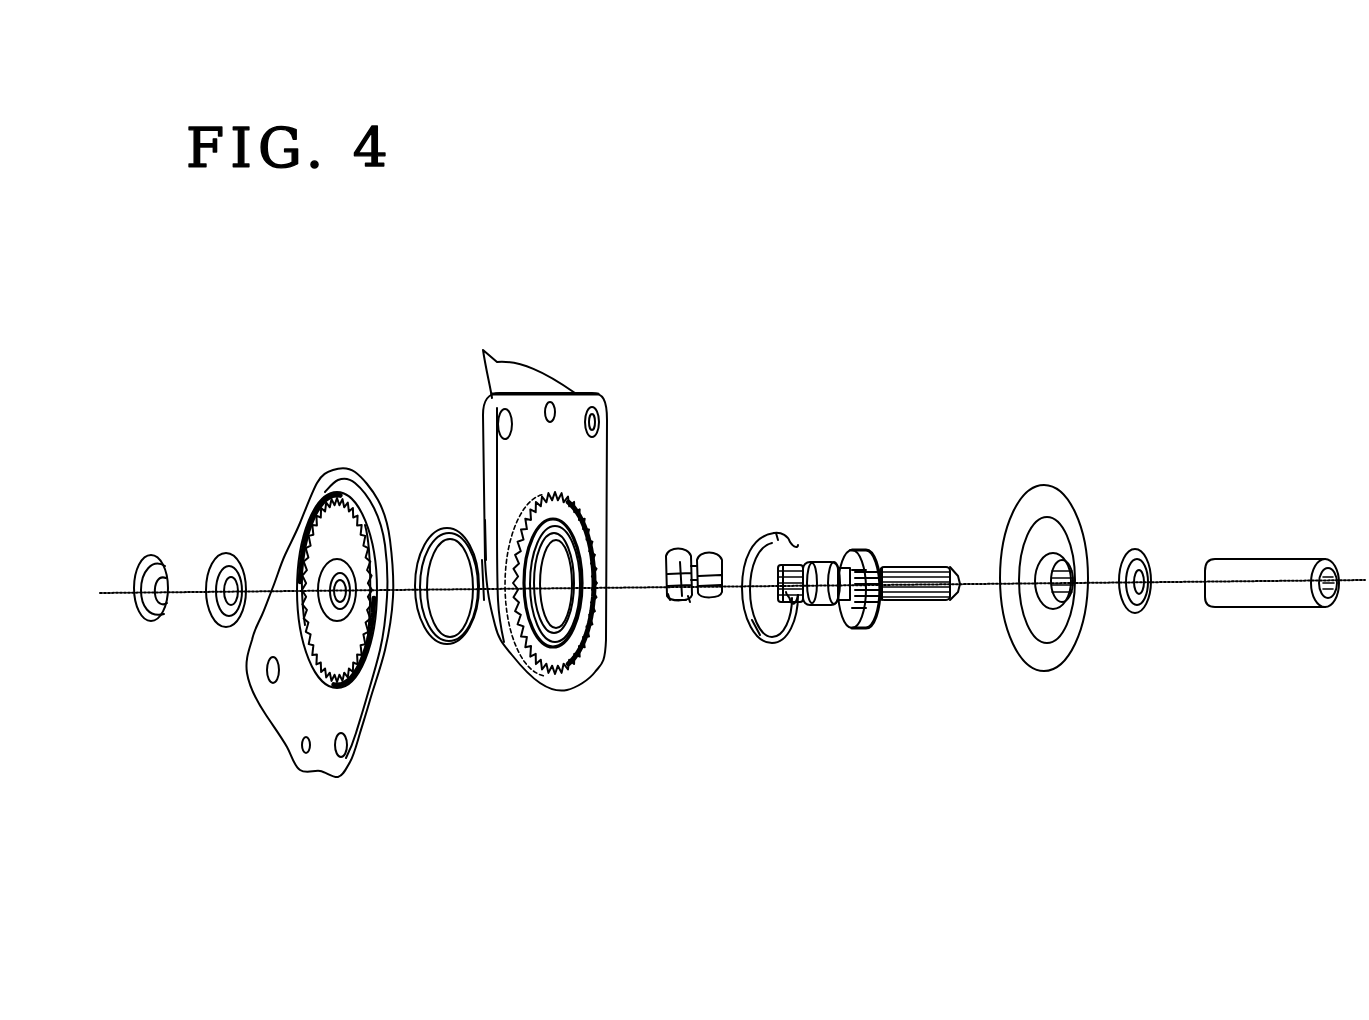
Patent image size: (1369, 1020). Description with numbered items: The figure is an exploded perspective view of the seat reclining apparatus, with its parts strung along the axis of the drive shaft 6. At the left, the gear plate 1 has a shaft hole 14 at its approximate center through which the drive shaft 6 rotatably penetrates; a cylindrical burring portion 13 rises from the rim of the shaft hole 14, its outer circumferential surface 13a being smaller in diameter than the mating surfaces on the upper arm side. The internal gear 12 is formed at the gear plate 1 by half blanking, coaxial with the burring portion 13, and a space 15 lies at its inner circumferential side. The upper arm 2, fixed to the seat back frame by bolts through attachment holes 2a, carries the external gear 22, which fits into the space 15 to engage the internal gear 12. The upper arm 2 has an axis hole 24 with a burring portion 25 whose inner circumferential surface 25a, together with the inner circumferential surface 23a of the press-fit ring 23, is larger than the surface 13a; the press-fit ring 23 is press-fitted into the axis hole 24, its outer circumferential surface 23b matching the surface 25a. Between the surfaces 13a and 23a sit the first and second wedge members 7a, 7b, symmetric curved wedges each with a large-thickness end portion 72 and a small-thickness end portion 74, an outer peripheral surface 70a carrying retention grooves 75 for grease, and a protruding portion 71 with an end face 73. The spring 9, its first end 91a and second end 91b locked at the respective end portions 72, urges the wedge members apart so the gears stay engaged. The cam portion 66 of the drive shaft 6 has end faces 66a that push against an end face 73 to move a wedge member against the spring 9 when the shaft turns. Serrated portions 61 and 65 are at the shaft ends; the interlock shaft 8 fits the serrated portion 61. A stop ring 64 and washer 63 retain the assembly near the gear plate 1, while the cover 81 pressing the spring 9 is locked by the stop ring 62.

The gear plate 1 is at (350, 633).
The upper arm 2 is at (559, 508).
The attachment holes 2a is at (520, 354).
The drive shaft 6 is at (869, 683).
The first wedge member 7a is at (665, 555).
The second wedge member 7b is at (727, 546).
The interlock shaft 8 is at (1272, 529).
The spring 9 is at (770, 661).
The internal gear 12 is at (387, 535).
The burring portion 13 is at (378, 618).
The outer circumferential surface 13a is at (299, 518).
The shaft hole 14 is at (391, 531).
The space 15 is at (341, 503).
The external gear 22 is at (551, 657).
The press-fit ring 23 is at (471, 645).
The inner circumferential surface 23a is at (459, 484).
The outer circumferential surface 23b is at (433, 470).
The axis hole 24 is at (566, 657).
The burring portion 25 is at (588, 623).
The inner circumferential surface 25a is at (599, 520).
The serrated portion 61 is at (932, 510).
The stop ring 62 is at (1138, 532).
The washer 63 is at (216, 532).
The stop ring 64 is at (140, 533).
The serrated portion 65 is at (806, 528).
The cam portion 66 is at (865, 662).
The end face 66a is at (886, 506).
The outer peripheral surface 70a is at (665, 508).
The protruding portion 71 is at (719, 517).
The large-thickness end portion 72 is at (697, 500).
The end face 73 is at (697, 647).
The small-thickness end portion 74 is at (664, 690).
The retention grooves 75 is at (650, 614).
The cover 81 is at (1044, 531).
The first end 91a is at (732, 680).
The second end 91b is at (787, 476).